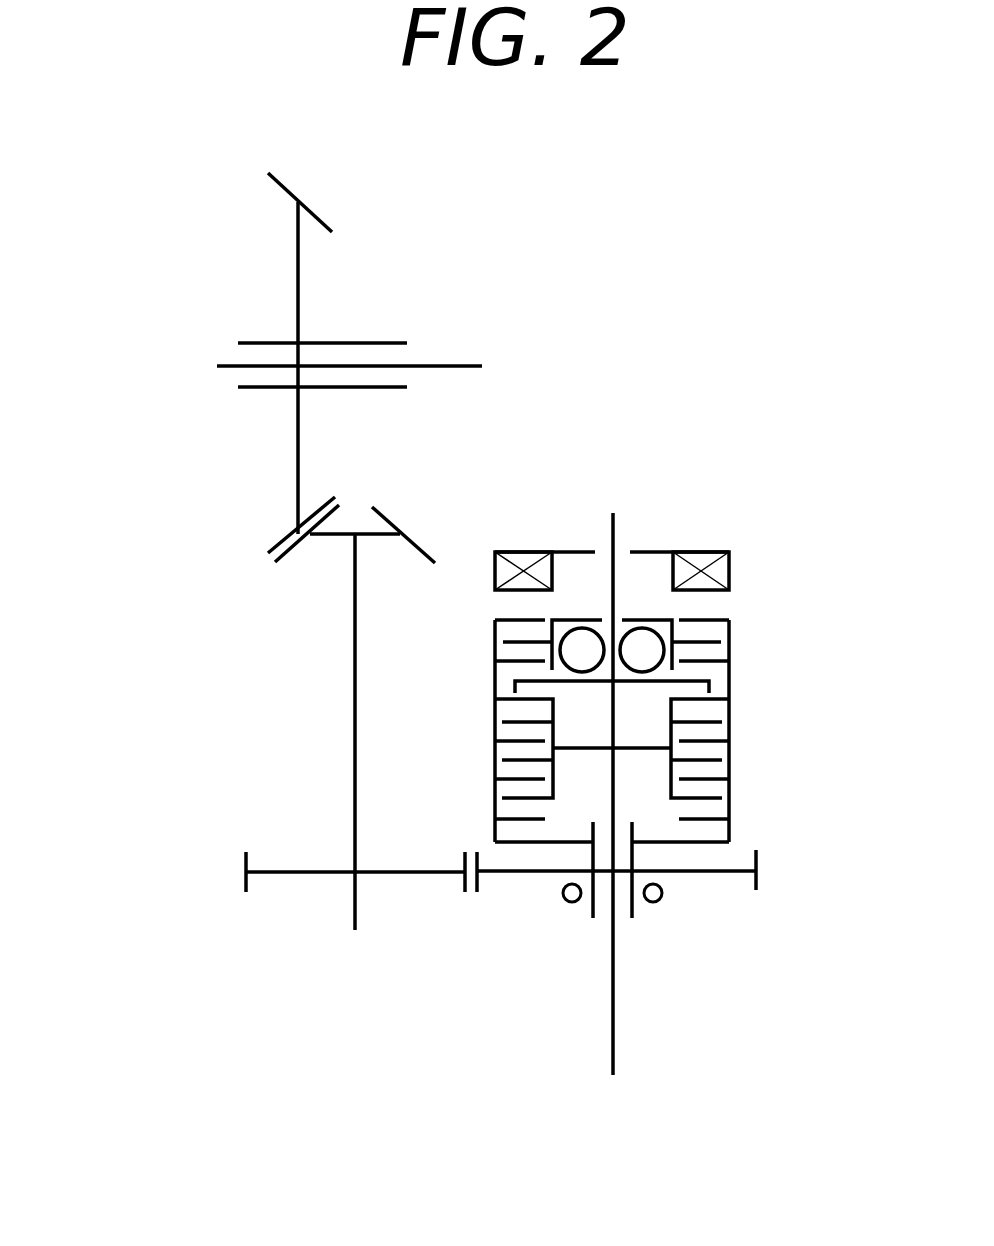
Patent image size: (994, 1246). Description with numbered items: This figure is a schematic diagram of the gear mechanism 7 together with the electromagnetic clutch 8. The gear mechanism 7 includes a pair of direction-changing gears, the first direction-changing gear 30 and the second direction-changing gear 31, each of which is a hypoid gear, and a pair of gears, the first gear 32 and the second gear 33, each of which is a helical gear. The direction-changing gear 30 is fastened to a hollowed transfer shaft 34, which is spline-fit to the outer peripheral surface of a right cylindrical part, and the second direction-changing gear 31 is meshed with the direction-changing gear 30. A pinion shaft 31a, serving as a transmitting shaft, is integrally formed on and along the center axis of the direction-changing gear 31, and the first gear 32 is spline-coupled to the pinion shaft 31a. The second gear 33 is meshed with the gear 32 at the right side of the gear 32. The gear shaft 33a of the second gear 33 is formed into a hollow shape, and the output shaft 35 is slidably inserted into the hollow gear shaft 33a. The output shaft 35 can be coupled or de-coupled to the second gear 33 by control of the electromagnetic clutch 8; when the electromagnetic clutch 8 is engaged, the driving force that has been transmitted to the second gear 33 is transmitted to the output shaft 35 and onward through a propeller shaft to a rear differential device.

The gear mechanism 7 is at (182, 738).
The electromagnetic clutch 8 is at (757, 693).
The first direction-changing gear 30 is at (298, 280).
The second direction-changing gear 31 is at (386, 514).
The pinion shaft 31a is at (355, 657).
The first gear 32 is at (290, 873).
The second gear 33 is at (520, 873).
The gear shaft 33a is at (632, 855).
The transfer shaft 34 is at (262, 342).
The output shaft 35 is at (613, 1020).